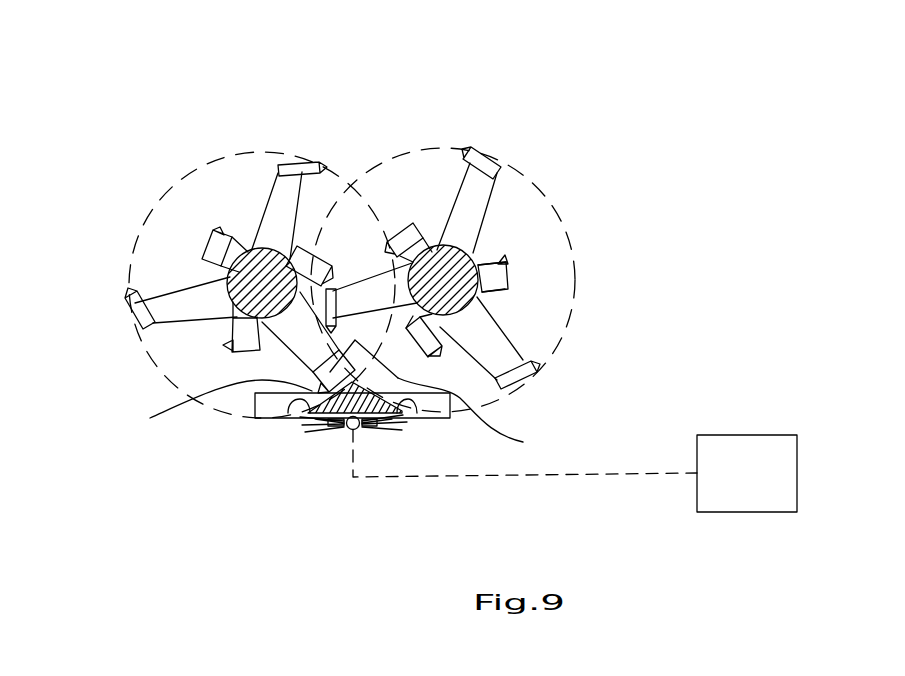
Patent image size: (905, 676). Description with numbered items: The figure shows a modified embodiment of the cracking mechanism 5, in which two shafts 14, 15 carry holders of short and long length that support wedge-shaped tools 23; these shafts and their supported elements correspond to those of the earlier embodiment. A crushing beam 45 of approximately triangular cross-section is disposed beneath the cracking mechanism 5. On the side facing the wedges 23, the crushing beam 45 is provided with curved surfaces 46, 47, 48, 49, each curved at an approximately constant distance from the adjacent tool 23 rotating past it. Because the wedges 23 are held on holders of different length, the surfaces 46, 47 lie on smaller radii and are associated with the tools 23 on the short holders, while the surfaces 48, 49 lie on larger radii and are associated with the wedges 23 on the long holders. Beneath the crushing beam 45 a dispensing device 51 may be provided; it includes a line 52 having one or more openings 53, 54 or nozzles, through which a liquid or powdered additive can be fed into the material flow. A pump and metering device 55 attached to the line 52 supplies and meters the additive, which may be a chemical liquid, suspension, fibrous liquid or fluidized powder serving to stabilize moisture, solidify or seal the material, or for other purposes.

The cracking mechanism 5 is at (399, 110).
The shaft 14 is at (253, 248).
The shaft 15 is at (475, 258).
The wedge 23 is at (125, 305).
The crushing beam 45 is at (245, 428).
The curved surface 46 is at (231, 399).
The curved surface 47 is at (479, 413).
The curved surface 48 is at (290, 412).
The curved surface 49 is at (430, 420).
The dispensing device 51 is at (342, 462).
The line 52 is at (358, 432).
The opening 53 is at (327, 434).
The opening 54 is at (375, 433).
The pump and metering device 55 is at (740, 433).